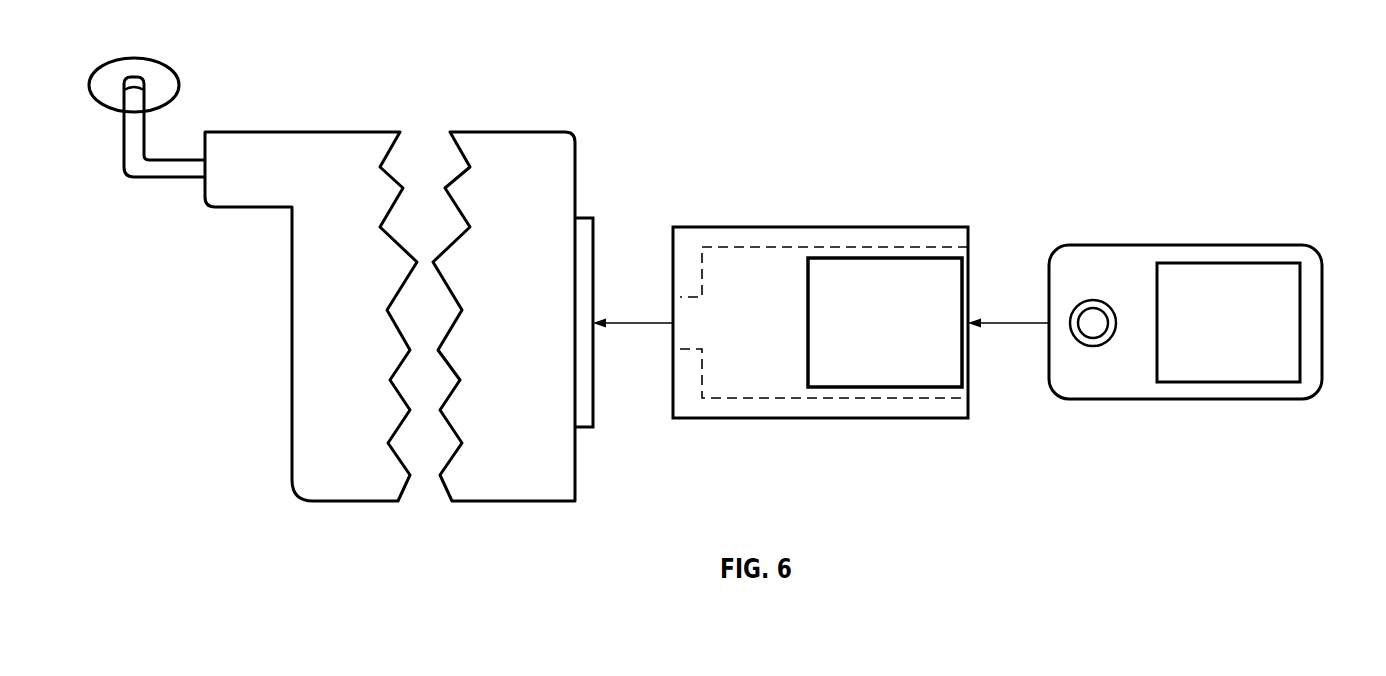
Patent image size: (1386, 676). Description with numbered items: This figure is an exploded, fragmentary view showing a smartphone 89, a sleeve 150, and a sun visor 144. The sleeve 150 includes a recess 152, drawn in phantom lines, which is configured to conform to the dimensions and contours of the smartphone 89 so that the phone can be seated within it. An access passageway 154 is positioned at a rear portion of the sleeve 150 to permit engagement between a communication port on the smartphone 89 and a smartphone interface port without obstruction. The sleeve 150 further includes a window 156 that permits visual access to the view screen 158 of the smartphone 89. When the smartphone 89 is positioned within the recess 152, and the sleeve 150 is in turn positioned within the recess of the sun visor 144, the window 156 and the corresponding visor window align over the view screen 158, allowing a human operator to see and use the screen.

The sun visor 144 is at (507, 132).
The sleeve 150 is at (820, 227).
The recess 152 is at (798, 398).
The access passageway 154 is at (685, 316).
The window 156 is at (893, 362).
The smartphone 89 is at (1187, 400).
The view screen 158 is at (1245, 298).